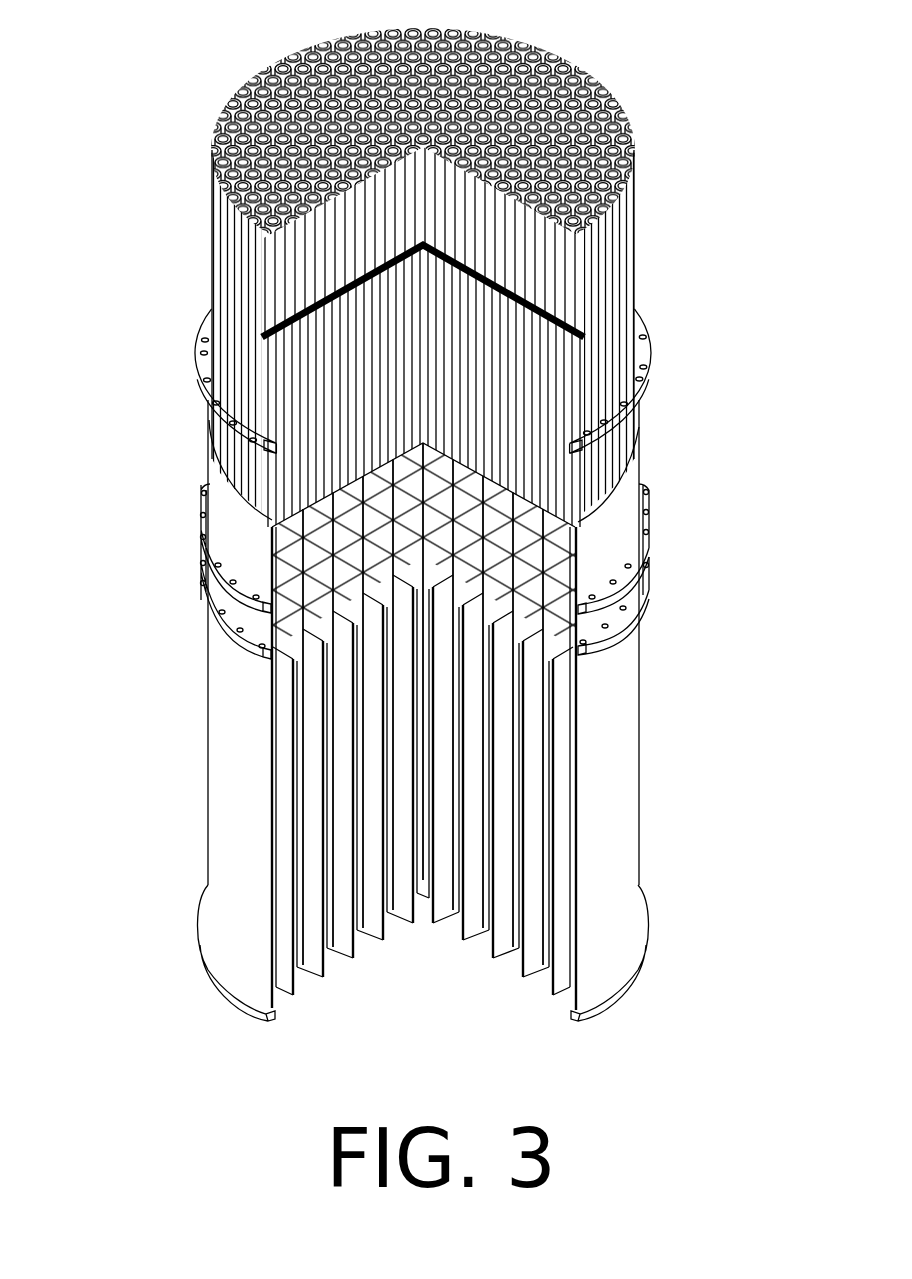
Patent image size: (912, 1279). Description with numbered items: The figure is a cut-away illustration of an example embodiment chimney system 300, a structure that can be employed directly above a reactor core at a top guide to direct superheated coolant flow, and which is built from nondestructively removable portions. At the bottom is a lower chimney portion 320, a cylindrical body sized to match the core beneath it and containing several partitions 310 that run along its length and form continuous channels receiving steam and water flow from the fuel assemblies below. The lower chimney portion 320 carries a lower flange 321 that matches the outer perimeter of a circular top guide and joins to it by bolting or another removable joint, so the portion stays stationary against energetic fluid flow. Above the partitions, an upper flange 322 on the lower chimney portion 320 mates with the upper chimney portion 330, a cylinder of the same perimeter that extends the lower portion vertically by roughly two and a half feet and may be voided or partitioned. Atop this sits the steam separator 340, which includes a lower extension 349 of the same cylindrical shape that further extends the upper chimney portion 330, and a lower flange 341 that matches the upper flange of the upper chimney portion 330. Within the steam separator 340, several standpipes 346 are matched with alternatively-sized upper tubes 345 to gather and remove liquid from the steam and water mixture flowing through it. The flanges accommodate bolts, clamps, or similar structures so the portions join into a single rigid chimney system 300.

The chimney system 300 is at (75, 31).
The partitions 310 is at (340, 745).
The lower chimney portion 320 is at (620, 831).
The lower flange 321 is at (197, 923).
The upper flange 322 is at (203, 583).
The upper chimney portion 330 is at (623, 590).
The steam separator 340 is at (613, 367).
The lower flange 341 is at (647, 520).
The upper tubes 345 is at (270, 258).
The standpipes 346 is at (280, 387).
The lower extension 349 is at (207, 497).